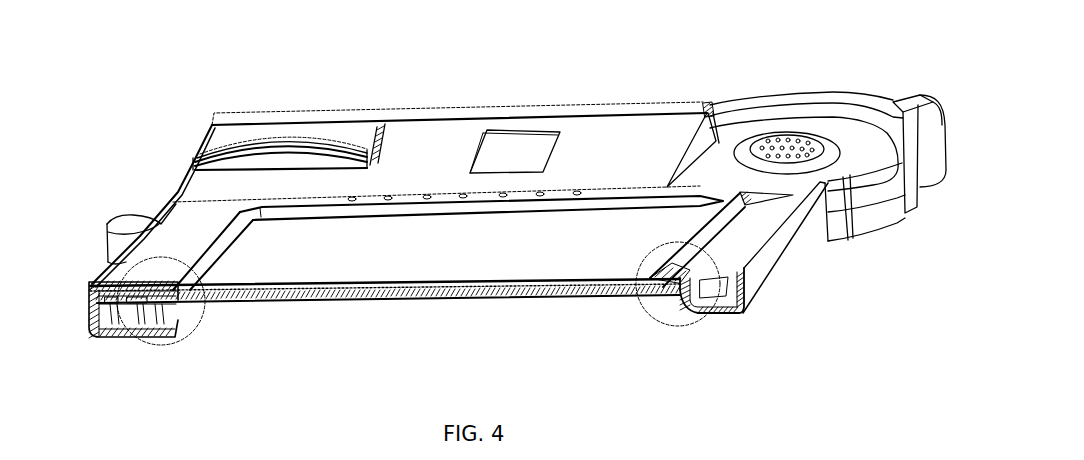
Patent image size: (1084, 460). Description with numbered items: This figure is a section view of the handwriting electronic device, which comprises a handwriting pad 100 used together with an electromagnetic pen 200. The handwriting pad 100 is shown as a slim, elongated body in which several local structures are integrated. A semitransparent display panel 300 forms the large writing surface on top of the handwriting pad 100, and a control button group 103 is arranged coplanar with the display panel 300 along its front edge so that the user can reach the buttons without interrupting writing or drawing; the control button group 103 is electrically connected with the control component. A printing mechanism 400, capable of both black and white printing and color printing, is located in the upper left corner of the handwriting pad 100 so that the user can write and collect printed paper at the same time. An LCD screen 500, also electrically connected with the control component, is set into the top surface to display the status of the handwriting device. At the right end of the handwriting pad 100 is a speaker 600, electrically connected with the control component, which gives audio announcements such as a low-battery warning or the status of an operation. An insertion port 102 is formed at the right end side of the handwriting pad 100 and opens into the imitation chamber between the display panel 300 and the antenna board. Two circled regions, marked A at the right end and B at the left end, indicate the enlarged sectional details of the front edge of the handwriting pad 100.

The handwriting pad 100 is at (182, 224).
The electromagnetic pen 200 is at (483, 108).
The display panel 300 is at (463, 267).
The printing mechanism 400 is at (257, 137).
The LCD screen 500 is at (524, 147).
The speaker 600 is at (777, 140).
The insertion port 102 is at (745, 228).
The control button group 103 is at (576, 194).
The detail A is at (694, 323).
The detail B is at (137, 342).